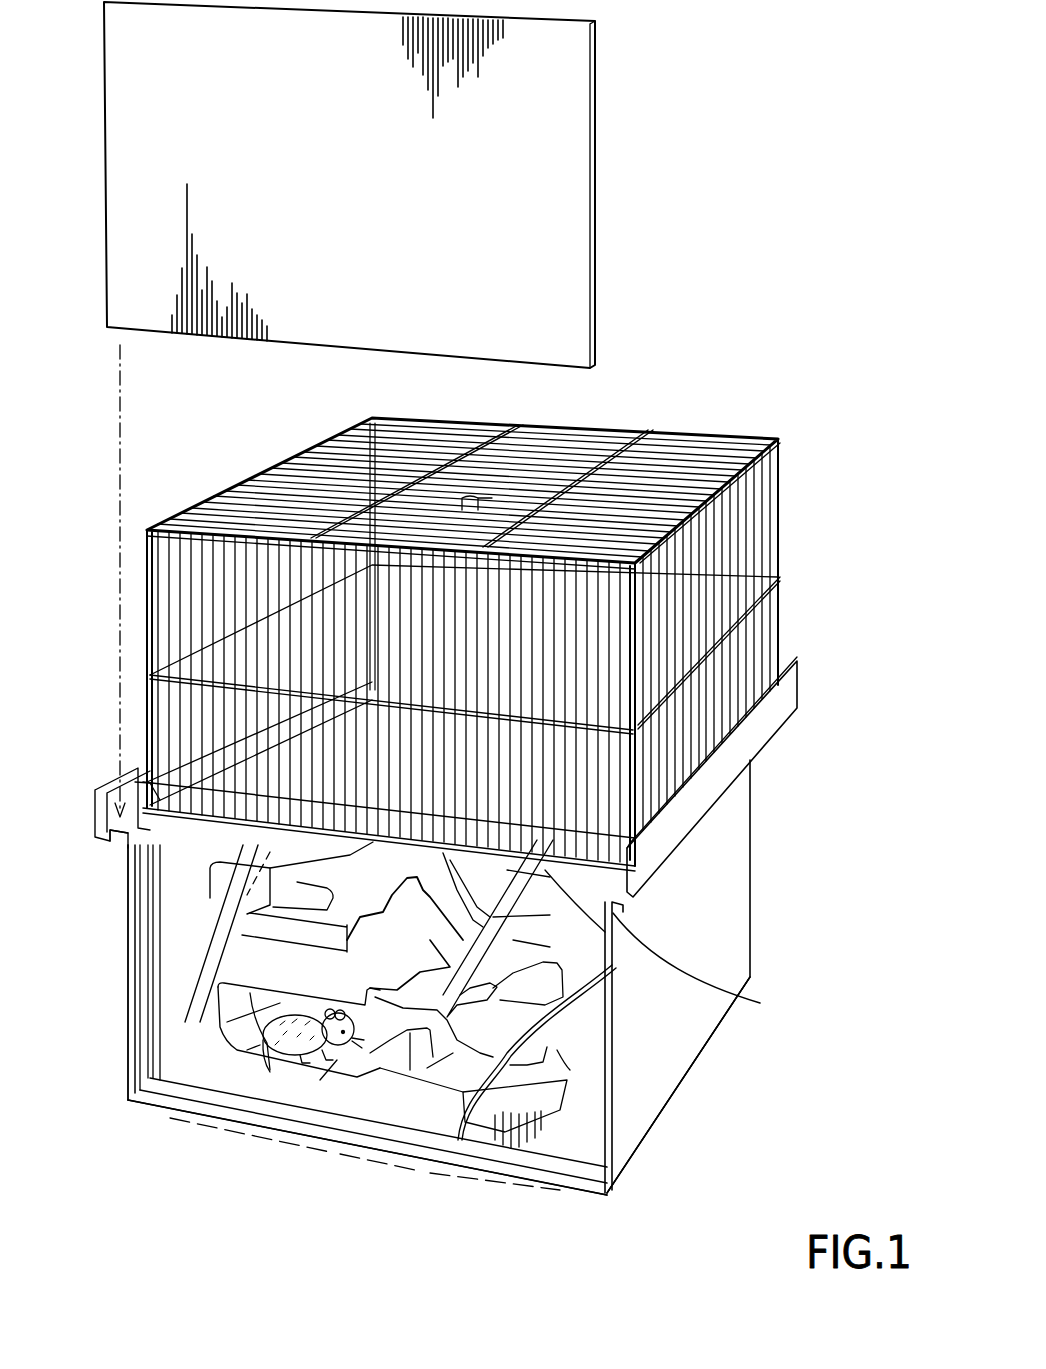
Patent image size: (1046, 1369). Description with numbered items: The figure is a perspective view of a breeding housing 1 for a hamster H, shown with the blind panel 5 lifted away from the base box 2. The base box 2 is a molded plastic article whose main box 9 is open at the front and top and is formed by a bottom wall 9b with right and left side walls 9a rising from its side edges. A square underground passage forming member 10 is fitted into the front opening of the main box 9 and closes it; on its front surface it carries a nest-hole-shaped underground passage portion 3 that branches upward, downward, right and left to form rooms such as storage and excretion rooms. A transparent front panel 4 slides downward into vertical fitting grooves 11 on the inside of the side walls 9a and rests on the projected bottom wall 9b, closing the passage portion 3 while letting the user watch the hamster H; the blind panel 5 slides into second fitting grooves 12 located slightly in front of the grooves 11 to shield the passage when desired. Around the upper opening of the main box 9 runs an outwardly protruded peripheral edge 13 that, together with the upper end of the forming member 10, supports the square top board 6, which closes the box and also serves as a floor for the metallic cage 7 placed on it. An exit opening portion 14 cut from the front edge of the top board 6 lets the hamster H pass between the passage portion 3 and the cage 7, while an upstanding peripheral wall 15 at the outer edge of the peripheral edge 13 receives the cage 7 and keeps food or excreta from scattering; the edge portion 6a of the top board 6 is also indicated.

The breeding housing 1 is at (665, 392).
The base box 2 is at (720, 908).
The underground passage portion 3 is at (560, 1080).
The transparent front panel 4 is at (203, 1020).
The blind panel 5 is at (590, 130).
The top board 6 is at (625, 1005).
The guide wall end portion 6a is at (148, 790).
The cage 7 is at (728, 435).
The main box 9 is at (650, 1103).
The side wall 9a is at (130, 1022).
The bottom wall 9b is at (405, 1160).
The underground passage forming member 10 is at (553, 1150).
The fitting groove 11 is at (150, 893).
The fitting groove 12 is at (142, 950).
The outwardly protruded peripheral edge 13 is at (107, 840).
The exit opening portion 14 is at (452, 813).
The upstanding peripheral wall 15 is at (90, 807).
The hamster H is at (270, 1072).